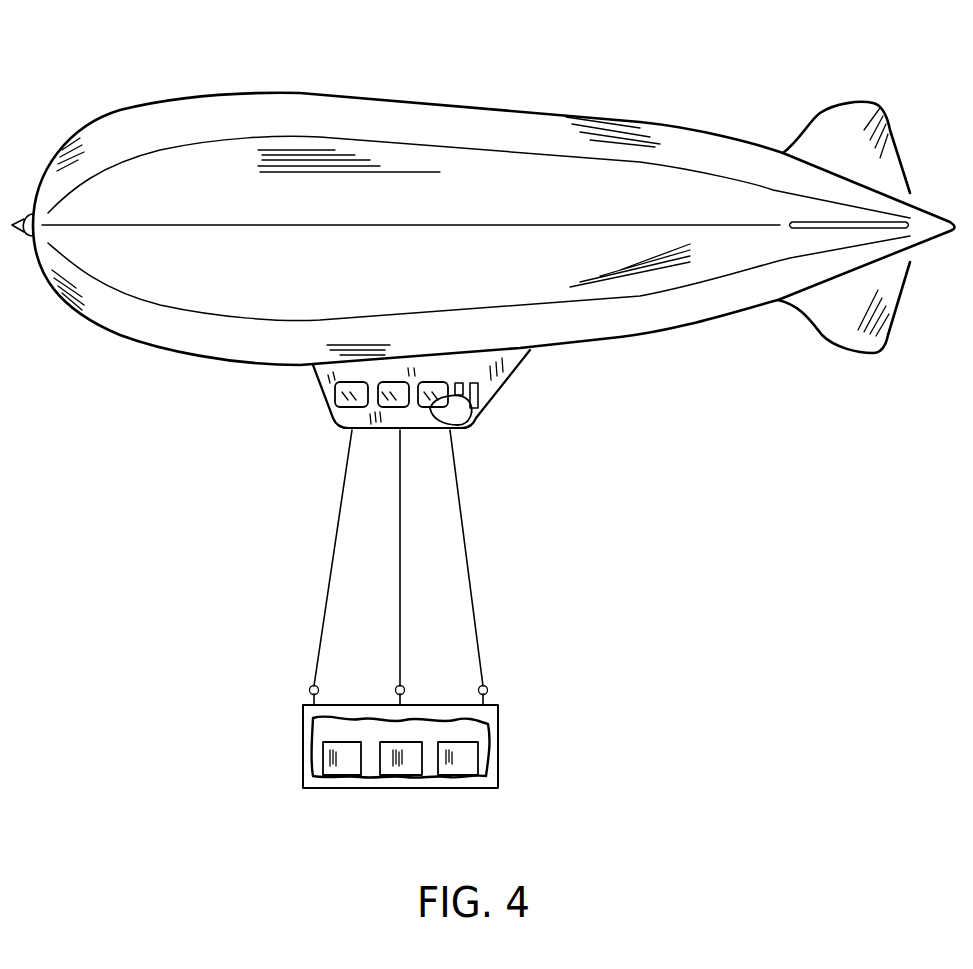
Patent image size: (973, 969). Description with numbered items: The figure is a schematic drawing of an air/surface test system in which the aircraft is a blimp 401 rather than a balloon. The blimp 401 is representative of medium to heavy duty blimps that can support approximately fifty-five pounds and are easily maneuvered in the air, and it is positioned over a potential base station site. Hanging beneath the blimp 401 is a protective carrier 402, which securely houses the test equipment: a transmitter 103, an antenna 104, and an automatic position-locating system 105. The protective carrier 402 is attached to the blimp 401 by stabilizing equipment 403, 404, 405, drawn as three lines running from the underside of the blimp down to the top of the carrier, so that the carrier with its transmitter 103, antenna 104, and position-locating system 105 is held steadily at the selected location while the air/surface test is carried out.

The blimp 401 is at (638, 121).
The protective carrier 402 is at (437, 772).
The stabilizing equipment 403 is at (461, 508).
The stabilizing equipment 404 is at (401, 568).
The stabilizing equipment 405 is at (341, 508).
The transmitter 103 is at (349, 767).
The antenna 104 is at (406, 770).
The automatic position-locating system 105 is at (465, 760).